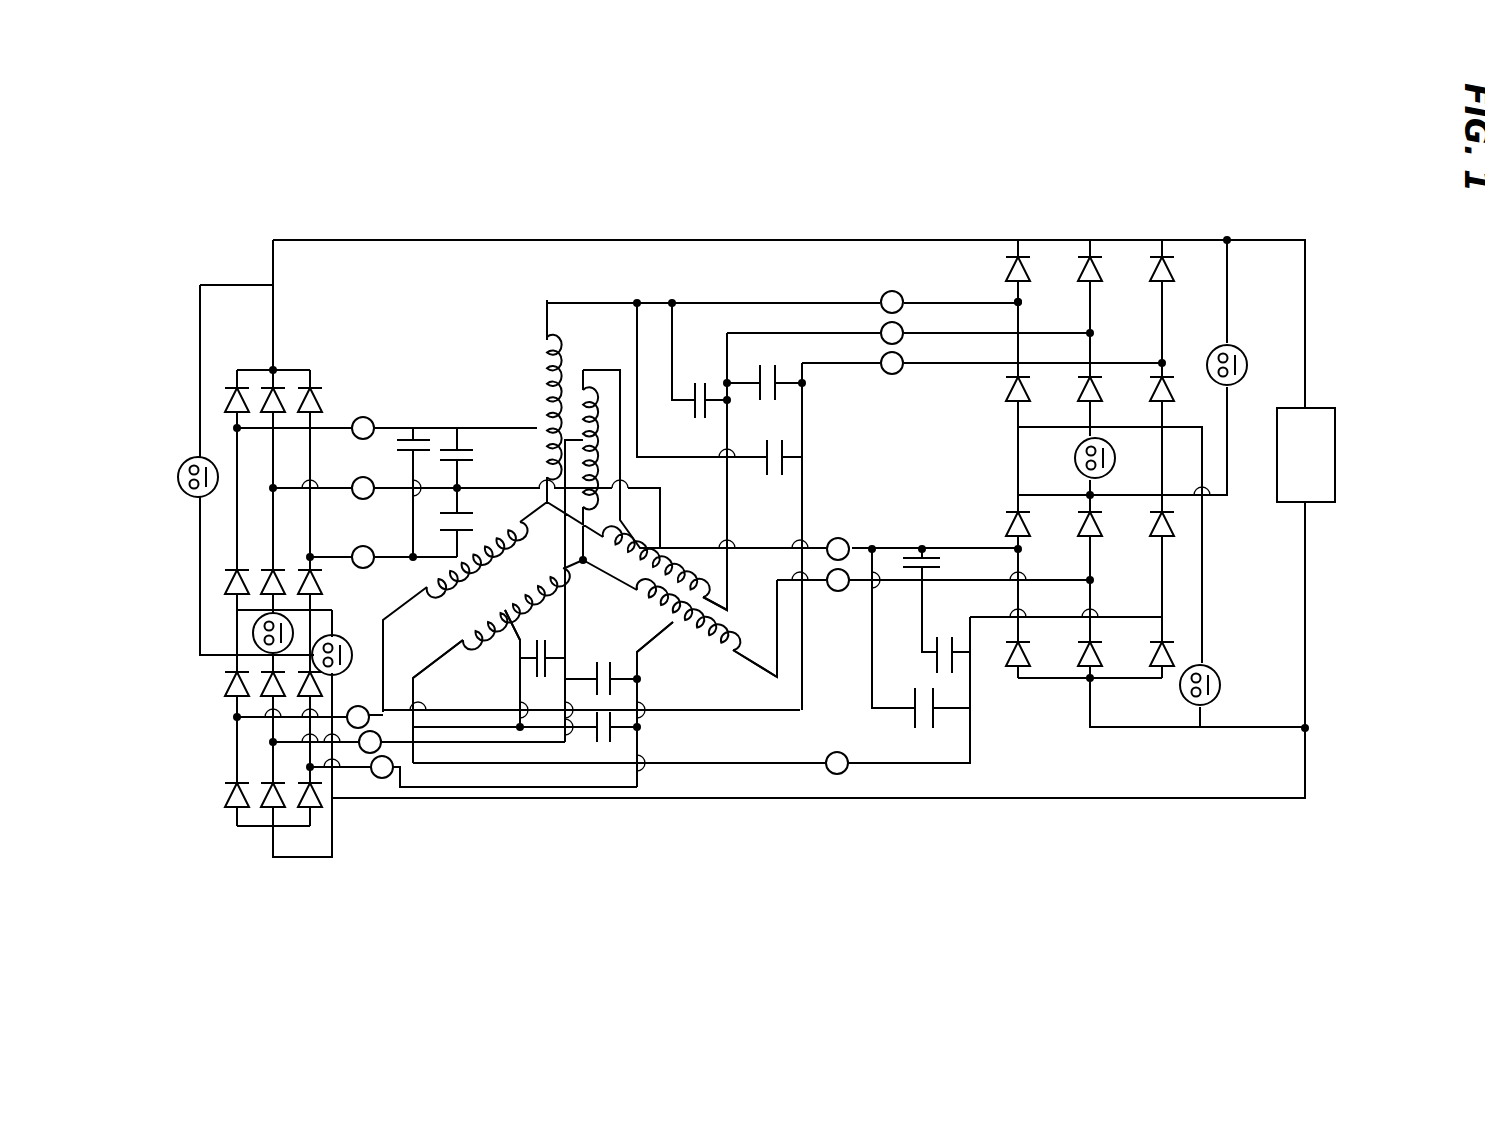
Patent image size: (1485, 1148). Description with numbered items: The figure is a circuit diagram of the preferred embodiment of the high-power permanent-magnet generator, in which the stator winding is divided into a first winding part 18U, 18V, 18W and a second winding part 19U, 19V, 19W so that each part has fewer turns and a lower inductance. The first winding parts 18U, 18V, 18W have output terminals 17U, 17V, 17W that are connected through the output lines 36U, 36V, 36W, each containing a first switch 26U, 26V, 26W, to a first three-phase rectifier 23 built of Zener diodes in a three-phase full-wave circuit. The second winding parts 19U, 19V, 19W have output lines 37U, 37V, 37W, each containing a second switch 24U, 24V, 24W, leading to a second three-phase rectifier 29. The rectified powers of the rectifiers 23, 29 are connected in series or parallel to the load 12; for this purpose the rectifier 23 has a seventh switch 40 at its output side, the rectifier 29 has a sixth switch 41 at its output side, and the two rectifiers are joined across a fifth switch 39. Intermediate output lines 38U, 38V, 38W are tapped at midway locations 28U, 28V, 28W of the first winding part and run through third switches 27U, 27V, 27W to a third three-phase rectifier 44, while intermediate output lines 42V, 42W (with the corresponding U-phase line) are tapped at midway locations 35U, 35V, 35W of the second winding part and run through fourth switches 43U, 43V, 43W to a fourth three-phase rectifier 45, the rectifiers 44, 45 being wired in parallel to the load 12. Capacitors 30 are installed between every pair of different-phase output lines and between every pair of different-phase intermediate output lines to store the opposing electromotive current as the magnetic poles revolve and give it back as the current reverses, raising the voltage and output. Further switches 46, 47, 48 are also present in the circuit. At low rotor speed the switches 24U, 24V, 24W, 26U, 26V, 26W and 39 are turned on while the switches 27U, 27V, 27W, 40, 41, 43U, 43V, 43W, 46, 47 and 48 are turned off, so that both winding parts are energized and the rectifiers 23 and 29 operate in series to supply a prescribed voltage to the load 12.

The load 12 is at (1322, 474).
The U-phase output terminal 17U is at (547, 300).
The V-phase output terminal 17V is at (730, 580).
The W-phase output terminal 17W is at (365, 666).
The U-phase first winding part 18U is at (535, 380).
The V-phase first winding part 18V is at (603, 545).
The W-phase first winding part 18W is at (452, 575).
The U-phase second winding part 19U is at (615, 420).
The V-phase second winding part 19V is at (700, 655).
The W-phase second winding part 19W is at (500, 637).
The first three-phase rectifier 23 is at (1107, 278).
The U-phase second switch 24U is at (846, 540).
The V-phase second switch 24V is at (840, 591).
The W-phase second switch 24W is at (838, 778).
The U-phase first switch 26U is at (888, 292).
The V-phase first switch 26V is at (900, 335).
The W-phase first switch 26W is at (893, 376).
The U-phase third switch 27U is at (365, 417).
The V-phase third switch 27V is at (360, 477).
The W-phase third switch 27W is at (365, 570).
The U-phase intermediate location 28U is at (540, 442).
The V-phase intermediate location 28V is at (655, 560).
The W-phase intermediate location 28W is at (475, 563).
The second three-phase rectifier 29 is at (1052, 667).
The capacitor 30 is at (413, 438).
The U-phase intermediate location 35U is at (578, 398).
The V-phase intermediate location 35V is at (680, 625).
The W-phase intermediate location 35W is at (527, 560).
The U-phase output line 36U is at (577, 303).
The V-phase output line 36V is at (815, 330).
The W-phase output line 36W is at (965, 365).
The U-phase output line 37U is at (683, 547).
The V-phase output line 37V is at (778, 640).
The W-phase output line 37W is at (911, 800).
The U-phase intermediate output line 38U is at (441, 427).
The V-phase intermediate output line 38V is at (348, 530).
The W-phase intermediate output line 38W is at (330, 555).
The fifth switch 39 is at (1073, 458).
The seventh switch 40 is at (1222, 685).
The sixth switch 41 is at (1250, 350).
The V-phase intermediate output line 42V is at (628, 787).
The W-phase intermediate output line 42W is at (475, 742).
The U-phase fourth switch 43U is at (370, 753).
The V-phase fourth switch 43V is at (385, 777).
The W-phase fourth switch 43W is at (358, 728).
The third three-phase rectifier 44 is at (255, 420).
The fourth three-phase rectifier 45 is at (252, 690).
The switch 46 is at (178, 478).
The switch 47 is at (253, 633).
The switch 48 is at (312, 657).